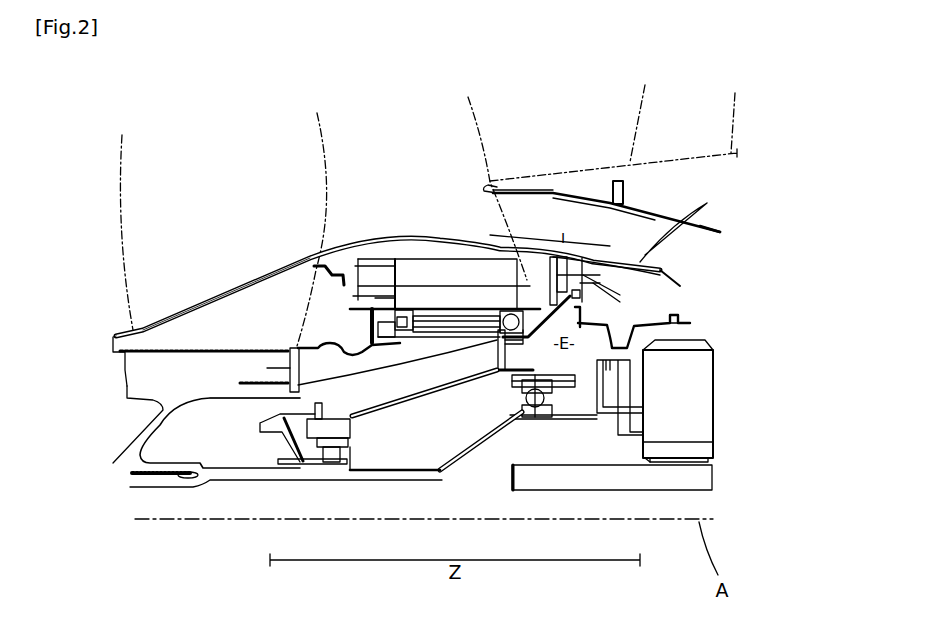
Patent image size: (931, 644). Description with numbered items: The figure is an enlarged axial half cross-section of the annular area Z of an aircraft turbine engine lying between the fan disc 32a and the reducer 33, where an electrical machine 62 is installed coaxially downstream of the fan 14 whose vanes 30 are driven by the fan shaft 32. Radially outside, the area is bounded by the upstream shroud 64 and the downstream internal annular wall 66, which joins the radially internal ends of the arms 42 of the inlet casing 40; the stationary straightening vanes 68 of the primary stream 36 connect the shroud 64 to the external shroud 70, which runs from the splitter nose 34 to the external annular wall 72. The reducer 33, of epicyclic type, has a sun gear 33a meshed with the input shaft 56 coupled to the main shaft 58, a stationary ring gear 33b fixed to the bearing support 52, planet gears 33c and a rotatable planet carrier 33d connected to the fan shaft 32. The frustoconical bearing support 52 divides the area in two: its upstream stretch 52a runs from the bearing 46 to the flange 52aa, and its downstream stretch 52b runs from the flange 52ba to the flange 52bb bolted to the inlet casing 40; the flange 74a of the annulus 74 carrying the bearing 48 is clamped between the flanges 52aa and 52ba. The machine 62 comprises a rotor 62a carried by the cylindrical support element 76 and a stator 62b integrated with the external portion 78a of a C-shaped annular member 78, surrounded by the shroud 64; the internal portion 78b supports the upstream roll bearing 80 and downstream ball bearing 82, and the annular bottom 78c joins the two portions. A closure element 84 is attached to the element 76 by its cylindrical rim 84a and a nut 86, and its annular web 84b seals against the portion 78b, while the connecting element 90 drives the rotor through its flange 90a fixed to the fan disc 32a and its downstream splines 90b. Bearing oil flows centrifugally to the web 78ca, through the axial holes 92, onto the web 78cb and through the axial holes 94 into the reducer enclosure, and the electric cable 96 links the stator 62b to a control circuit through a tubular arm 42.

The fan 14 is at (155, 328).
The vanes 30 is at (226, 294).
The fan shaft 32 is at (165, 500).
The fan disc 32a is at (127, 390).
The reducer 33 is at (646, 429).
The sun gear 33a is at (695, 447).
The ring gear 33b is at (683, 338).
The planet gears 33c is at (712, 483).
The planet carrier 33d is at (605, 375).
The splitter nose 34 is at (491, 176).
The primary stream 36 is at (612, 245).
The inlet casing 40 is at (601, 163).
The arms 42 is at (697, 243).
The bearing 46 is at (338, 465).
The bearing 48 is at (530, 362).
The bearing support 52 is at (437, 473).
The upstream stretch 52a is at (380, 413).
The radially external annular flange 52aa is at (510, 370).
The downstream stretch 52b is at (553, 392).
The radially internal annular flange 52ba is at (444, 284).
The radially external annular flange 52bb is at (622, 270).
The input shaft 56 is at (672, 463).
The main shaft 58 is at (707, 490).
The electrical machine 62 is at (330, 268).
The rotor 62a is at (403, 314).
The stator 62b is at (508, 312).
The shroud 64 is at (397, 255).
The internal annular wall 66 is at (712, 300).
The straightening vanes 68 is at (517, 190).
The external shroud 70 is at (550, 188).
The external annular wall 72 is at (645, 212).
The annulus 74 is at (533, 417).
The radially external annular flange 74a is at (528, 417).
The support element 76 is at (418, 337).
The annular member 78 is at (312, 263).
The external portion 78a is at (359, 267).
The internal portion 78b is at (417, 414).
The annular bottom 78c is at (535, 192).
The web 78ca is at (487, 187).
The web 78cb is at (637, 232).
The bearing 80 is at (377, 287).
The bearing 82 is at (522, 272).
The closure element 84 is at (362, 336).
The cylindrical rim 84a is at (365, 298).
The annular web 84b is at (377, 391).
The nut 86 is at (250, 282).
The connecting element 90 is at (290, 345).
The annular flange 90a is at (267, 368).
The splines 90b is at (220, 420).
The axial holes 92 is at (644, 358).
The axial holes 94 is at (590, 280).
The electric cable 96 is at (700, 212).